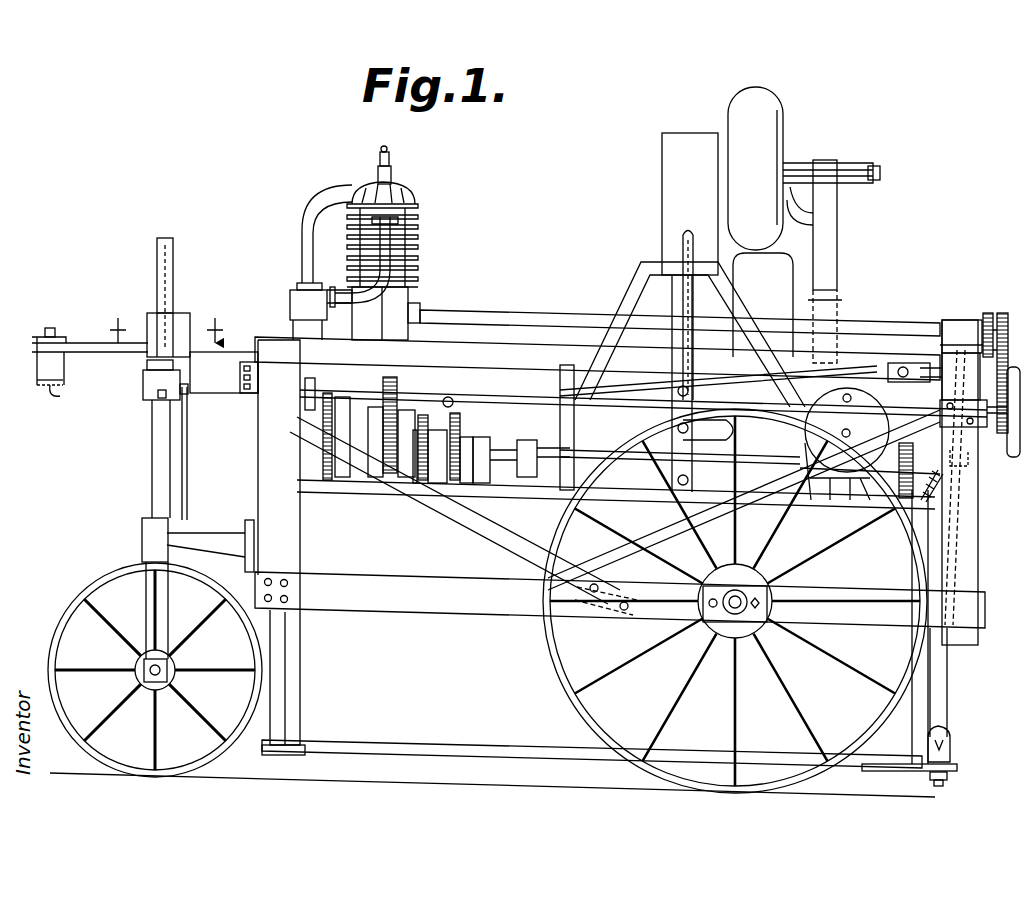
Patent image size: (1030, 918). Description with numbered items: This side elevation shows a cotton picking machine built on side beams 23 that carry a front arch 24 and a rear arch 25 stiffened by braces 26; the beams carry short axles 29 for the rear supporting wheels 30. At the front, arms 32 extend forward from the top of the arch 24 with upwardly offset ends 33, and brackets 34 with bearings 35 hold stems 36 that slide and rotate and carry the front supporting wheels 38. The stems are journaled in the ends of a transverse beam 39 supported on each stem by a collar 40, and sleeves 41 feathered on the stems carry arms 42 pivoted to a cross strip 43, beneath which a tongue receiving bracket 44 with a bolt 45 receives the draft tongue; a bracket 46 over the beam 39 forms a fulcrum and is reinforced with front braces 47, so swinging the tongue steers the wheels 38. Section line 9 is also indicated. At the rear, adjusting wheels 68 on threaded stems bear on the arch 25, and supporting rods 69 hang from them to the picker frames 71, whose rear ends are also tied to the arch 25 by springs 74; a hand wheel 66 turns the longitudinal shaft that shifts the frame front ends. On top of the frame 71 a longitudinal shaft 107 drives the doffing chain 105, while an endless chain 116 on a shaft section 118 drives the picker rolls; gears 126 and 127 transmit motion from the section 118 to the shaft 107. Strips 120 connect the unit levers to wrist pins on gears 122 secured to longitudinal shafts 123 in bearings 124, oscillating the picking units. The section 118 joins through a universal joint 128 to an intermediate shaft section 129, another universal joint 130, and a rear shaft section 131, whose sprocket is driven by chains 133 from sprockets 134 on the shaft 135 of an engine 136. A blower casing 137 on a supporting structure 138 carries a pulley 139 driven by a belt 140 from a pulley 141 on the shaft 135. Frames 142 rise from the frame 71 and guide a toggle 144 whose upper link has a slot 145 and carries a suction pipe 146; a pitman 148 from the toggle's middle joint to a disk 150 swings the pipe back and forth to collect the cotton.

The section line 9 is at (167, 331).
The side beams 23 is at (412, 598).
The front arch 24 is at (258, 464).
The rear arch 25 is at (978, 532).
The braces 26 is at (443, 522).
The short axles 29 is at (768, 603).
The rear supporting wheels 30 is at (549, 655).
The arms 32 is at (224, 373).
The offset ends 33 is at (184, 318).
The brackets 34 is at (220, 532).
The bearings 35 is at (142, 541).
The stems 36 is at (152, 480).
The front supporting wheels 38 is at (53, 642).
The transverse beam 39 is at (143, 388).
The collar 40 is at (152, 398).
The sleeves 41 is at (147, 326).
The arms 42 is at (75, 340).
The cross strip 43 is at (33, 339).
The tongue receiving bracket 44 is at (46, 386).
The bolt 45 is at (64, 388).
The bracket 46 is at (147, 366).
The front braces 47 is at (189, 457).
The hand wheel 66 is at (1009, 452).
The adjusting wheels 68 is at (968, 322).
The supporting rods 69 is at (950, 676).
The picker frames 71 is at (433, 744).
The springs 74 is at (906, 512).
The endless chain 105 is at (402, 478).
The longitudinal shaft 107 is at (583, 462).
The endless chain 116 is at (322, 462).
The shaft section 118 is at (365, 400).
The strips 120 is at (422, 488).
The gears 122 is at (495, 432).
The longitudinal shafts 123 is at (522, 442).
The bearings 124 is at (487, 482).
The gear 126 is at (350, 478).
The gear 127 is at (399, 388).
The universal joint 128 is at (448, 400).
The intermediate shaft section 129 is at (583, 326).
The universal joint 130 is at (902, 362).
The rear shaft section 131 is at (942, 312).
The chains 133 is at (973, 390).
The sprockets 134 is at (990, 318).
The shaft 135 is at (485, 309).
The engine 136 is at (419, 242).
The blower casing 137 is at (772, 105).
The supporting structure 138 is at (795, 278).
The pulley 139 is at (788, 165).
The belt 140 is at (838, 240).
The pulley 141 is at (838, 302).
The frames 142 is at (662, 240).
The toggle 144 is at (694, 367).
The slot 145 is at (689, 230).
The suction pipes 146 is at (656, 362).
The pitman 148 is at (732, 437).
The disk 150 is at (878, 430).